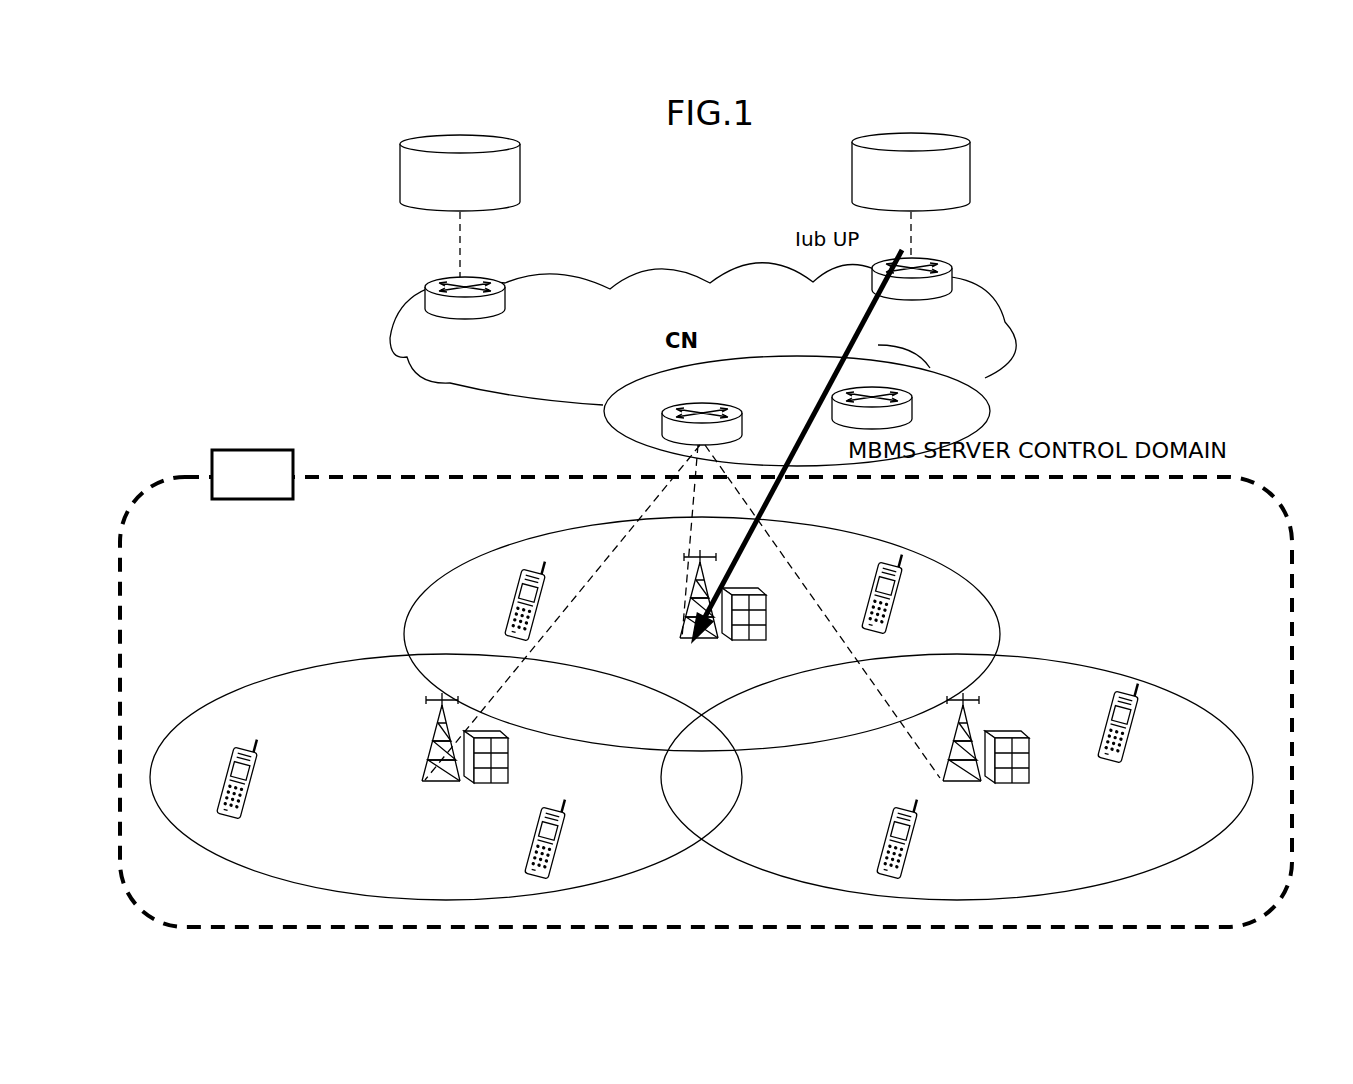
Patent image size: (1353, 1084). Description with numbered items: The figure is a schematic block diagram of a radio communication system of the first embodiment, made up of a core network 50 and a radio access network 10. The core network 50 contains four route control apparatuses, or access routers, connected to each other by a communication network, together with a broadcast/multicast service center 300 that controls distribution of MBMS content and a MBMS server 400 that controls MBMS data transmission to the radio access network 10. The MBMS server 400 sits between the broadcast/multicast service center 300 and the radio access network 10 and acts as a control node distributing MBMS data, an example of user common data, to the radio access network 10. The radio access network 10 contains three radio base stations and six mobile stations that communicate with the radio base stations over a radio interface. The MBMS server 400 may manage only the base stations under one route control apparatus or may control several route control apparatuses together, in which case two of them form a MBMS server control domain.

The radio access network 10 is at (258, 450).
The core network 50 is at (1005, 318).
The broadcast/multicast service center 300 is at (400, 179).
The MBMS server 400 is at (971, 175).